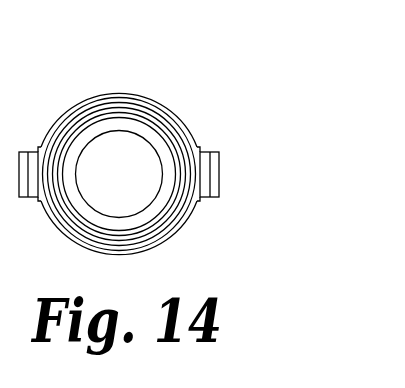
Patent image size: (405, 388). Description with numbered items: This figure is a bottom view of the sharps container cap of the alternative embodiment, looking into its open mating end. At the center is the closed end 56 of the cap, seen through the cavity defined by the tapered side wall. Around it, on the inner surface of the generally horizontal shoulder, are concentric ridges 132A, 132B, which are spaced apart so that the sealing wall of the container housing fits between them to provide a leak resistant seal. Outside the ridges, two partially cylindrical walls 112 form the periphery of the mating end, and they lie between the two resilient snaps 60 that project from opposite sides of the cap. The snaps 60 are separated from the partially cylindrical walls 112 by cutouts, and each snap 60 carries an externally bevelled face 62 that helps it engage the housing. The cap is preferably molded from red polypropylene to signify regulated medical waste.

The closed end 56 is at (120, 167).
The resilient snaps 60 is at (25, 152).
The externally bevelled face 62 is at (25, 197).
The partially cylindrical walls 112 is at (137, 91).
The concentric ridge 132A is at (167, 221).
The concentric ridge 132B is at (80, 112).